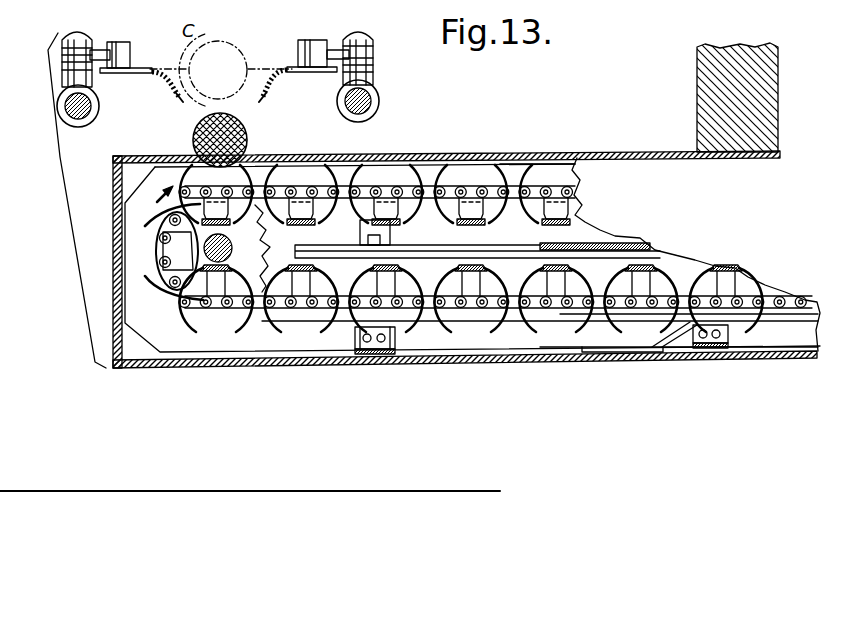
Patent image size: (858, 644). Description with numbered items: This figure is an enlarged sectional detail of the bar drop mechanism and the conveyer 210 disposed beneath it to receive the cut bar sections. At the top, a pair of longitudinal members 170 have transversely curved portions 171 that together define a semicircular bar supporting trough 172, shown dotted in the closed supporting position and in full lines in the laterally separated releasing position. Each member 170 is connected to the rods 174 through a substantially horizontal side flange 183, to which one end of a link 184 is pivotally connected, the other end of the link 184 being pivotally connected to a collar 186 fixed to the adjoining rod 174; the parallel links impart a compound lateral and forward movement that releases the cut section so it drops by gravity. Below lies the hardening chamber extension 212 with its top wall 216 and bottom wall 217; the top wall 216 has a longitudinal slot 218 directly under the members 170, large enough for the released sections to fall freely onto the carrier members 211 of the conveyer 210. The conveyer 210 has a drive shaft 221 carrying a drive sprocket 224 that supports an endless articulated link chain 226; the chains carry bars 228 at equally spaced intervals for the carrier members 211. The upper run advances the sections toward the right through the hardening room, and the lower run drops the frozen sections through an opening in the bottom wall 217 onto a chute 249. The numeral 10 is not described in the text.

The container (can) 10 is at (222, 42).
The longitudinal member 170 is at (156, 95).
The transversely curved portion 171 is at (165, 101).
The semicircular bar supporting trough 172 is at (250, 46).
The rod 174 is at (64, 111).
The horizontal side flange 183 is at (132, 66).
The link 184 is at (90, 50).
The collar 186 is at (57, 101).
The conveyer 210 is at (584, 186).
The carrier member 211 is at (518, 163).
The hardening chamber extension 212 is at (472, 152).
The top wall 216 is at (387, 154).
The bottom wall 217 is at (770, 347).
The longitudinal slot 218 is at (194, 148).
The drive shaft 221 is at (233, 250).
The drive sprocket 224 is at (276, 233).
The endless articulated link chain 226 is at (303, 190).
The bar 228 is at (460, 226).
The chute 249 is at (665, 331).